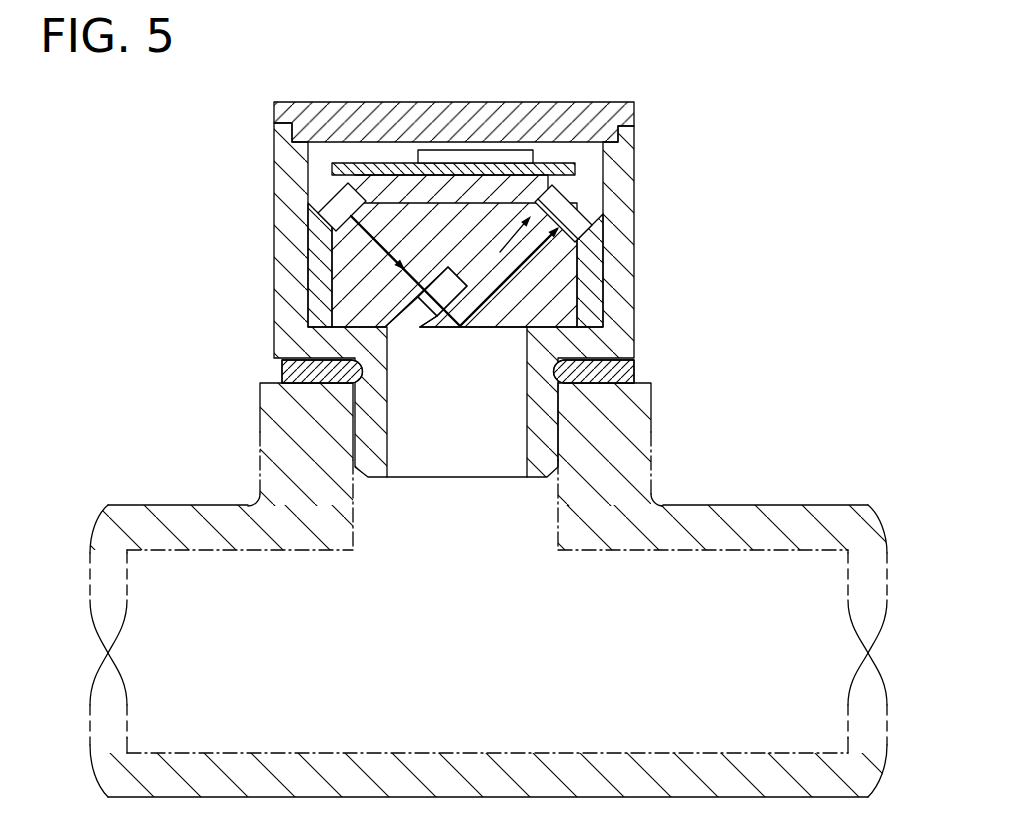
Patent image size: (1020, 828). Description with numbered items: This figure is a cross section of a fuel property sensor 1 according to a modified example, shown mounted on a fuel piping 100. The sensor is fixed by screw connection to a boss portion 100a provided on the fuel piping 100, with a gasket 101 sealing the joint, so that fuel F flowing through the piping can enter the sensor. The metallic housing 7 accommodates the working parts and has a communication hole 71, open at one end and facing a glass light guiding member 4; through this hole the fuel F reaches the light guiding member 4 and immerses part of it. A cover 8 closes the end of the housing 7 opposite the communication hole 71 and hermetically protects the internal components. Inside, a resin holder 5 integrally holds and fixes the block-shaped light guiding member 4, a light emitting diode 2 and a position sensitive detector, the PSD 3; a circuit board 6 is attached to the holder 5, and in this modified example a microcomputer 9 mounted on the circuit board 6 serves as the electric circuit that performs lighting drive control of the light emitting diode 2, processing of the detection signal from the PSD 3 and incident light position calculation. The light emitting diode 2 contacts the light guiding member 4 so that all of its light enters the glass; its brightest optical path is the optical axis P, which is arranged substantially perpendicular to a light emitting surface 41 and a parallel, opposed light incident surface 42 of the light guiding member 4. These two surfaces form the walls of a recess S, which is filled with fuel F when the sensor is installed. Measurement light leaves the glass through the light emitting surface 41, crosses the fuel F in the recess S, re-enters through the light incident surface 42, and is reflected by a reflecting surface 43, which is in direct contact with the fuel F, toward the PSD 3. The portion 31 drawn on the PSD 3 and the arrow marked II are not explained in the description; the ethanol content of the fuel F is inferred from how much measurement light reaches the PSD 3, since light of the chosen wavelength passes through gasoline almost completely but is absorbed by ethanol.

The fuel property sensor 1 is at (432, 300).
The light emitting diode 2 is at (327, 196).
The position sensitive detector (PSD) 3 is at (588, 214).
The light receiving surface 31 is at (566, 241).
The light guiding member 4 is at (335, 257).
The light emitting surface 41 is at (404, 322).
The light incident surface 42 is at (437, 311).
The reflecting surface 43 is at (447, 287).
The holder 5 is at (308, 275).
The circuit board 6 is at (330, 169).
The housing 7 is at (638, 178).
The communication hole 71 is at (458, 462).
The cover 8 is at (594, 102).
The microcomputer 9 is at (515, 150).
The gasket 101 is at (280, 372).
The fuel piping 100 is at (256, 494).
The boss portion 100a is at (262, 430).
The fuel F is at (225, 630).
The optical axis P is at (536, 291).
The recess S is at (506, 329).
The section line II is at (507, 247).